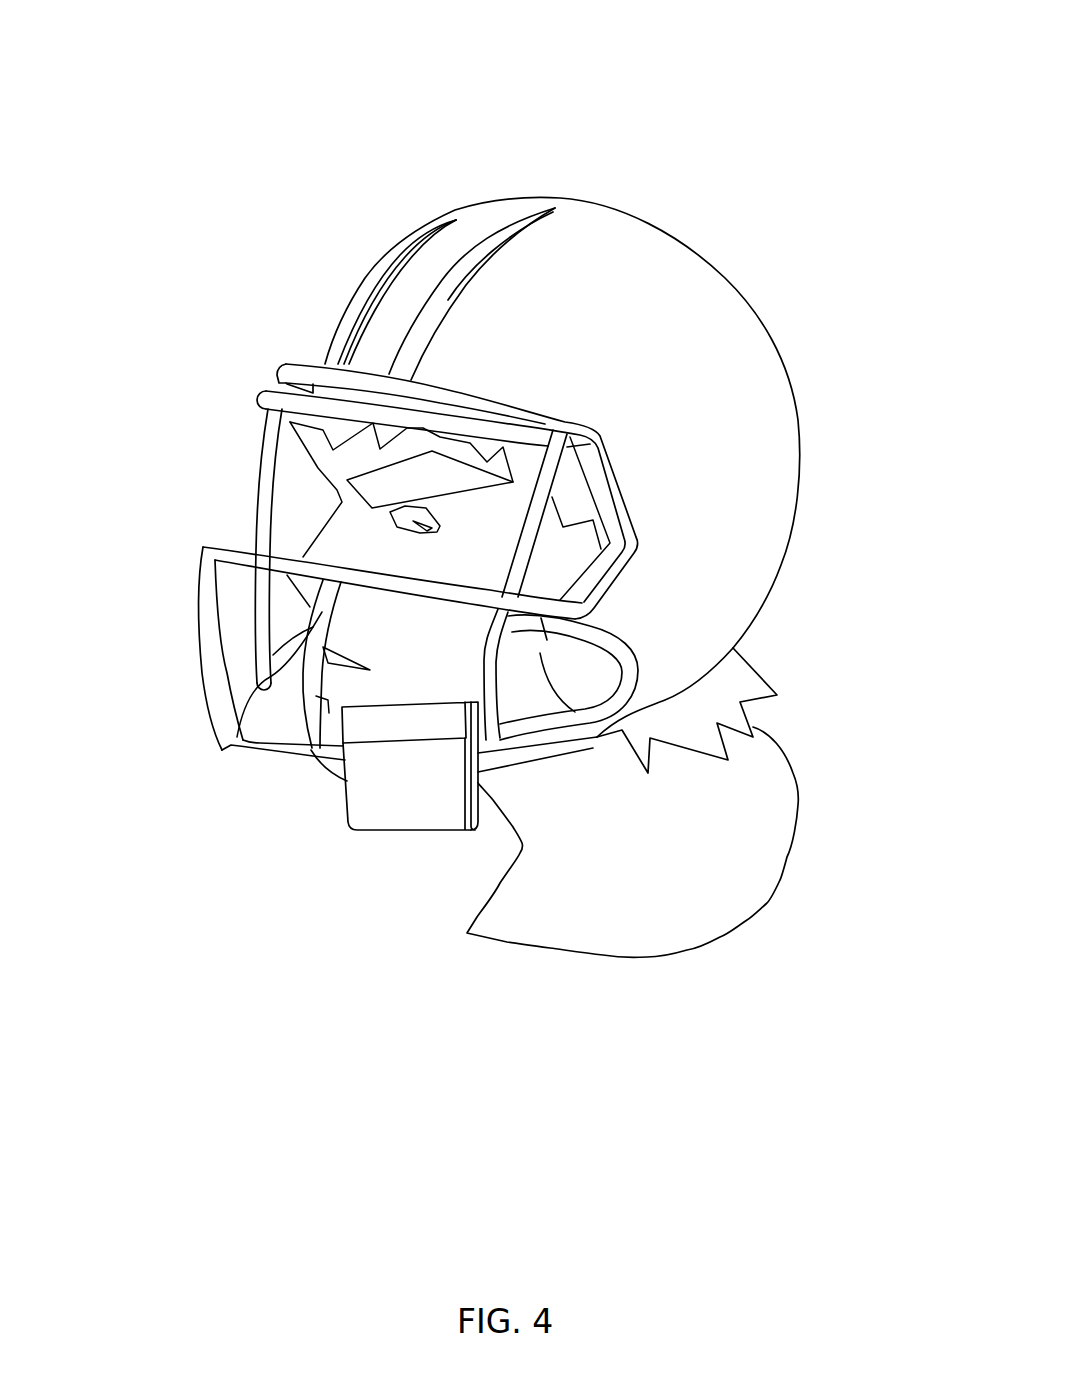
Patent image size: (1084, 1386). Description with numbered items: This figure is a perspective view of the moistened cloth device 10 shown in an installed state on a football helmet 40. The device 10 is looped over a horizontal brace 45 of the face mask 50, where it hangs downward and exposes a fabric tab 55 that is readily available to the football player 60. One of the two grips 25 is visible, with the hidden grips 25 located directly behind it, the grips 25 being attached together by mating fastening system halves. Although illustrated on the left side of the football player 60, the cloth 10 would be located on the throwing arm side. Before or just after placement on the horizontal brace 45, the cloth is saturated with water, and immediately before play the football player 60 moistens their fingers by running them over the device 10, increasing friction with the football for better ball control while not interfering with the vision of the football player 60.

The device 10 is at (167, 173).
The grips 25 is at (389, 757).
The football helmet 40 is at (737, 432).
The horizontal brace 45 is at (320, 757).
The face mask 50 is at (216, 707).
The fabric tab 55 is at (395, 791).
The football player 60 is at (363, 558).